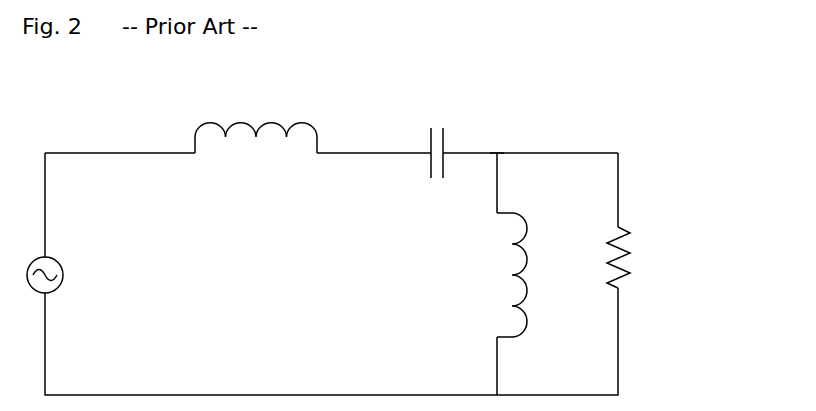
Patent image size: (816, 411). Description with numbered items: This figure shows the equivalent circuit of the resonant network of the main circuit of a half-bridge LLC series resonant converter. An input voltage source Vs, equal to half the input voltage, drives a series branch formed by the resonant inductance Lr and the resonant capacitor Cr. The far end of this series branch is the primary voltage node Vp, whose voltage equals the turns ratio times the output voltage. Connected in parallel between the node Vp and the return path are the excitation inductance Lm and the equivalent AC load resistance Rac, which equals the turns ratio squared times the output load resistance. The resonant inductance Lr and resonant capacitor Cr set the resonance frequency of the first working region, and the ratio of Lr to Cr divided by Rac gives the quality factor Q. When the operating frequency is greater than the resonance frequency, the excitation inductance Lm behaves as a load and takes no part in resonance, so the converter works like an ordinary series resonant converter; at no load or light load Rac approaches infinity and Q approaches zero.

The input voltage source Vs is at (92, 261).
The resonant inductance Lr is at (256, 153).
The resonant capacitor Cr is at (419, 161).
The primary voltage node Vp is at (539, 140).
The excitation inductance Lm is at (497, 275).
The equivalent AC load resistance Rac is at (708, 257).